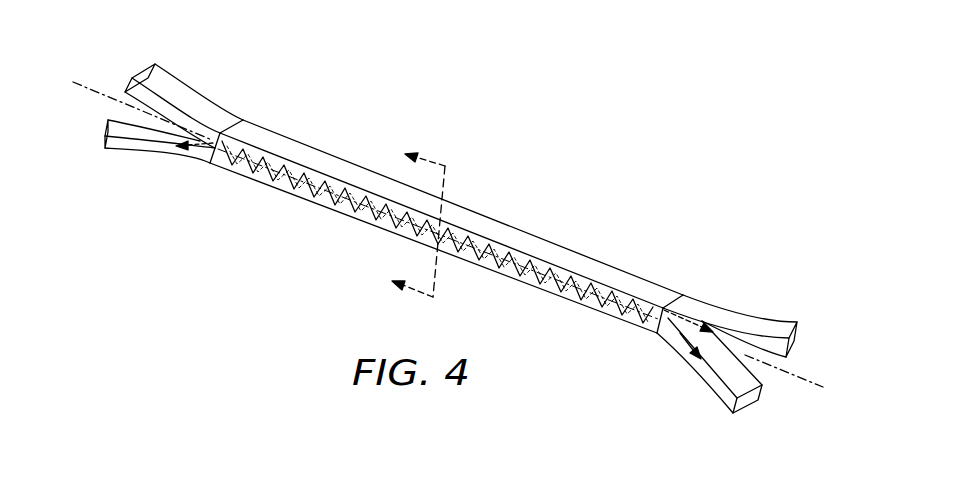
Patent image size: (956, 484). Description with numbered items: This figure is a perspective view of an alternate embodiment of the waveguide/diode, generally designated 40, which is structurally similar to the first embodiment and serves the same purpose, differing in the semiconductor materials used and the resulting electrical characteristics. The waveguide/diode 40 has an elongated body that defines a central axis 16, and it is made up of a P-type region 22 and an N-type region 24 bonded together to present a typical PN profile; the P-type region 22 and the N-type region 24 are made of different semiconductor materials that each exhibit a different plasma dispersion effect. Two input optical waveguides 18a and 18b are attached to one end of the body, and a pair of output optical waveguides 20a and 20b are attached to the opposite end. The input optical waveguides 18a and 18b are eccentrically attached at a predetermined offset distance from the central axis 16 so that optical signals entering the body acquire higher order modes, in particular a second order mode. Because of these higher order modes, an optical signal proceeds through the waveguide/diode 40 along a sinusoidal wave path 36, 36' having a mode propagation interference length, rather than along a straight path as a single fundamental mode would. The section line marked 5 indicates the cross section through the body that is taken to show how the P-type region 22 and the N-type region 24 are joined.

The central axis 16 is at (795, 375).
The input optical waveguide 18a is at (120, 140).
The input optical waveguide 18b is at (186, 100).
The output optical waveguide 20a is at (752, 401).
The output optical waveguide 20b is at (800, 338).
The P-type region 22 is at (536, 290).
The N-type region 24 is at (537, 246).
The sinusoidal wave path 36 is at (668, 368).
The sinusoidal wave path 36' is at (695, 295).
The waveguide/diode 40 is at (446, 229).
The section line 5- 5 is at (415, 221).